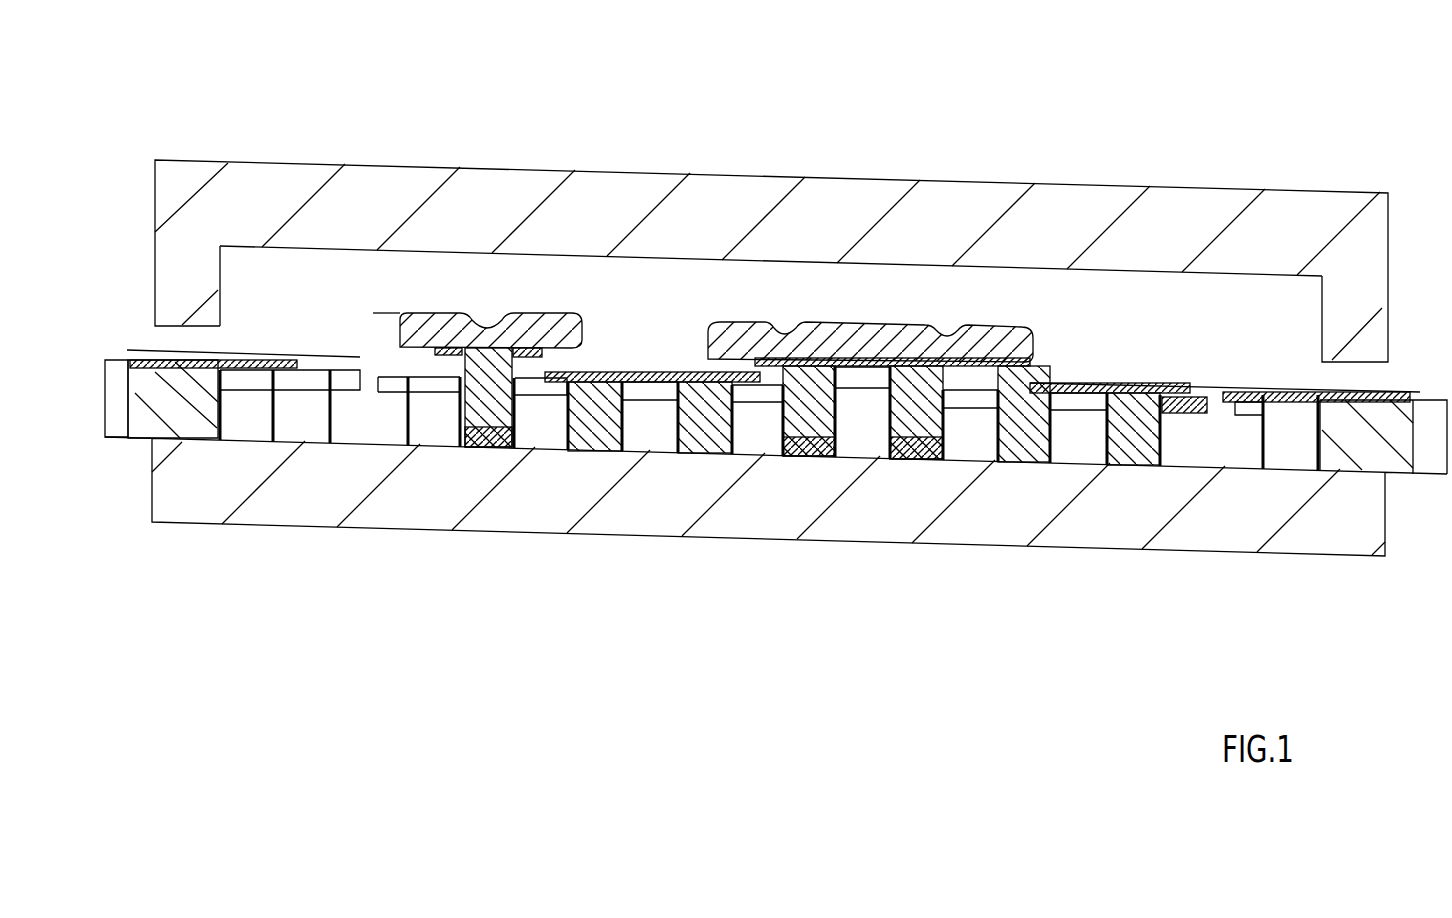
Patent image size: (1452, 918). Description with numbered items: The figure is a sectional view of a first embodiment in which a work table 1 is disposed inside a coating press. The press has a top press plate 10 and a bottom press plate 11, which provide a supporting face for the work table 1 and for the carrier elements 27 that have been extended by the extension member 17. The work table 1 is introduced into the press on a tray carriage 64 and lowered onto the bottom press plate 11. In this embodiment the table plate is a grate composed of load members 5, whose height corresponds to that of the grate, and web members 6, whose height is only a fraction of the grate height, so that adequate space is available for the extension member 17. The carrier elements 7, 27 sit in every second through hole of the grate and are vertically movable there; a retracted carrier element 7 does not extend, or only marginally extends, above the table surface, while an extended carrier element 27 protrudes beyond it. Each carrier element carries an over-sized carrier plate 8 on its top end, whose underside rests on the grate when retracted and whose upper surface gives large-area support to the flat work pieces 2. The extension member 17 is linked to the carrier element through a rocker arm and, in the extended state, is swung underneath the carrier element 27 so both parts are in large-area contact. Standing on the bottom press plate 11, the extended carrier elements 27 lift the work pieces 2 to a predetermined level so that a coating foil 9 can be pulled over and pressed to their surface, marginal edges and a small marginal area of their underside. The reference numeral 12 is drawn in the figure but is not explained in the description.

The work table 1 is at (1360, 435).
The work piece 2 is at (860, 342).
The load member 5 is at (407, 447).
The web member 6 is at (1180, 413).
The carrier element 7 is at (601, 395).
The carrier plate 8 is at (443, 350).
The coating foil 9 is at (391, 312).
The top press plate 10 is at (229, 205).
The bottom press plate 11 is at (337, 485).
The recess 12 is at (286, 285).
The extension member 17 is at (491, 449).
The carrier element 27 is at (493, 375).
The tray carriage 64 is at (117, 405).